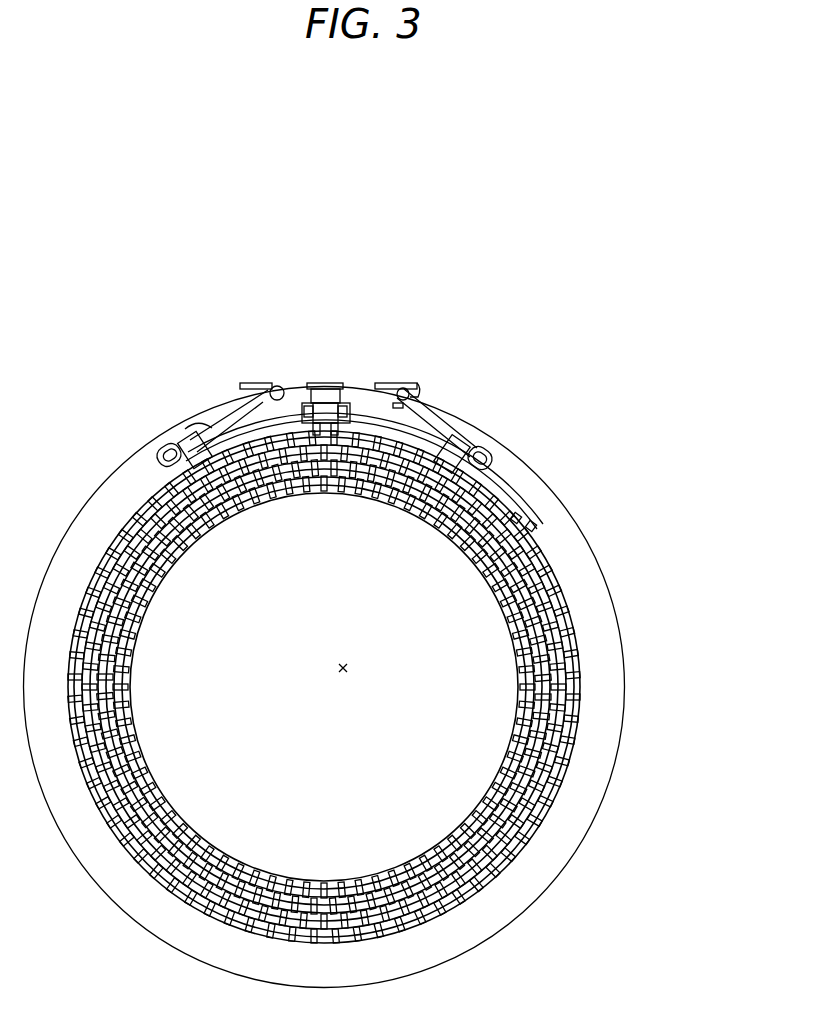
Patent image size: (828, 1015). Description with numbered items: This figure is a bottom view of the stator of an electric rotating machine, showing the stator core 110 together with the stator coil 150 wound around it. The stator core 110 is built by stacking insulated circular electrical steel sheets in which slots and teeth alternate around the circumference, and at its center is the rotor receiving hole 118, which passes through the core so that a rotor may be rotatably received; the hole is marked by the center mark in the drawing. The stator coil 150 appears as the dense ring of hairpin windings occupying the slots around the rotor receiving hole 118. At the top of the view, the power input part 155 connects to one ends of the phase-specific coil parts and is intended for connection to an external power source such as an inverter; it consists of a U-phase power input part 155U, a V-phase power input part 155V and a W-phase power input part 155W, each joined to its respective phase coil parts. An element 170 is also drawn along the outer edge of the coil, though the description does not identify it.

The stator core 110 is at (622, 762).
The rotor receiving hole 118 is at (346, 667).
The stator coil 150 is at (597, 694).
The power input part 155 is at (493, 294).
The U-phase power input part 155U is at (330, 407).
The V-phase power input part 155V is at (185, 440).
The W-phase power input part 155W is at (482, 440).
The insulating band 170 is at (498, 488).